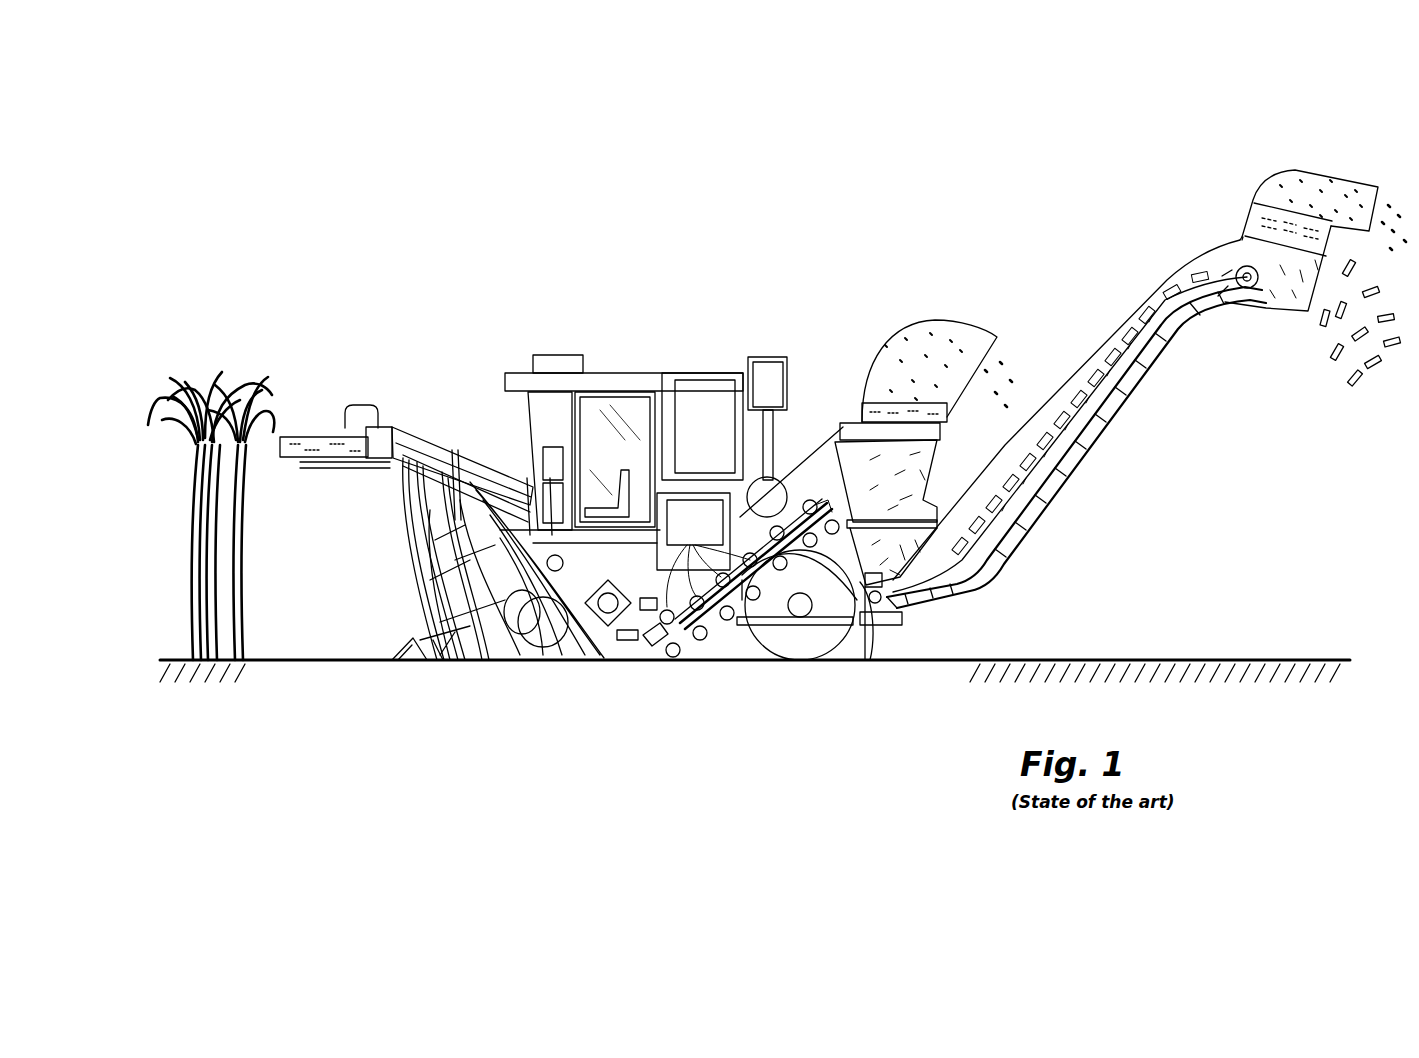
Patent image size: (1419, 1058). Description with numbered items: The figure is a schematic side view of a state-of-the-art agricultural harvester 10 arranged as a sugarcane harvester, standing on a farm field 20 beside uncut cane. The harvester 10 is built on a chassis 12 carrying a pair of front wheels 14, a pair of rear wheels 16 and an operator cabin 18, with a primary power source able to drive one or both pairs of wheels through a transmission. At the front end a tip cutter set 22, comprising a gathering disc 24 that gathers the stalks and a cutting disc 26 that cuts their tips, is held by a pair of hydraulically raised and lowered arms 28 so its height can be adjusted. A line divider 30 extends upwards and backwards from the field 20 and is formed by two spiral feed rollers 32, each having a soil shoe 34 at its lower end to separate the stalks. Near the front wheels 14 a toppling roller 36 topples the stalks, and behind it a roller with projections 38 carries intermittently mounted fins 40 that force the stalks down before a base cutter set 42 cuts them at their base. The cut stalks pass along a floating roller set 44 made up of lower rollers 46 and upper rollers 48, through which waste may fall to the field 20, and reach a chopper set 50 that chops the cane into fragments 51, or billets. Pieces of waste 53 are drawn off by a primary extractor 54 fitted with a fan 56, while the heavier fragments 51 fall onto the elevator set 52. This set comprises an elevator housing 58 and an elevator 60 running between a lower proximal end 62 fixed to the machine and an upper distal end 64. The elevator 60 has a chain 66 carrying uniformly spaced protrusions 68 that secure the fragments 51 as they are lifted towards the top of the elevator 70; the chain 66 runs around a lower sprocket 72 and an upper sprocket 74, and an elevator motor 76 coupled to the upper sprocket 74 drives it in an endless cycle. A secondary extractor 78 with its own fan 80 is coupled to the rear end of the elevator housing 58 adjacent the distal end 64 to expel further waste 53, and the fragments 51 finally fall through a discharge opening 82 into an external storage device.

The agricultural harvester 10 is at (478, 262).
The chassis 12 is at (644, 582).
The front wheels 14 is at (537, 663).
The rear wheels 16 is at (824, 652).
The operator cabin 18 is at (645, 362).
The farm field 20 is at (313, 664).
The tip cutter set 22 is at (378, 402).
The gathering disc 24 is at (290, 440).
The cutting disc 26 is at (312, 473).
The arms 28 is at (470, 463).
The line divider 30 is at (420, 628).
The spiral feed rollers 32 is at (437, 664).
The soil shoe 34 is at (413, 656).
The toppling roller 36 is at (563, 561).
The roller with projections 38 is at (602, 664).
The fins 40 is at (582, 660).
The base cutter set 42 is at (648, 664).
The floating roller set 44 is at (727, 652).
The lower rollers 46 is at (673, 660).
The upper rollers 48 is at (703, 550).
The chopper set 50 is at (767, 486).
The fragments 51 is at (918, 500).
The elevator set 52 is at (1082, 474).
The waste 53 is at (945, 336).
The primary extractor 54 is at (864, 330).
The fan 56 is at (860, 376).
The elevator housing 58 is at (1098, 430).
The elevator 60 is at (1082, 370).
The lower proximal end 62 is at (920, 607).
The upper distal end 64 is at (1228, 236).
The chain 66 is at (1128, 412).
The protrusions 68 is at (1160, 310).
The top of the elevator 70 is at (1046, 406).
The lower sprocket 72 is at (886, 616).
The upper sprocket 74 is at (1212, 276).
The elevator motor 76 is at (1224, 268).
The secondary extractor 78 is at (1298, 168).
The fan 80 is at (1254, 182).
The discharge opening 82 is at (1264, 311).